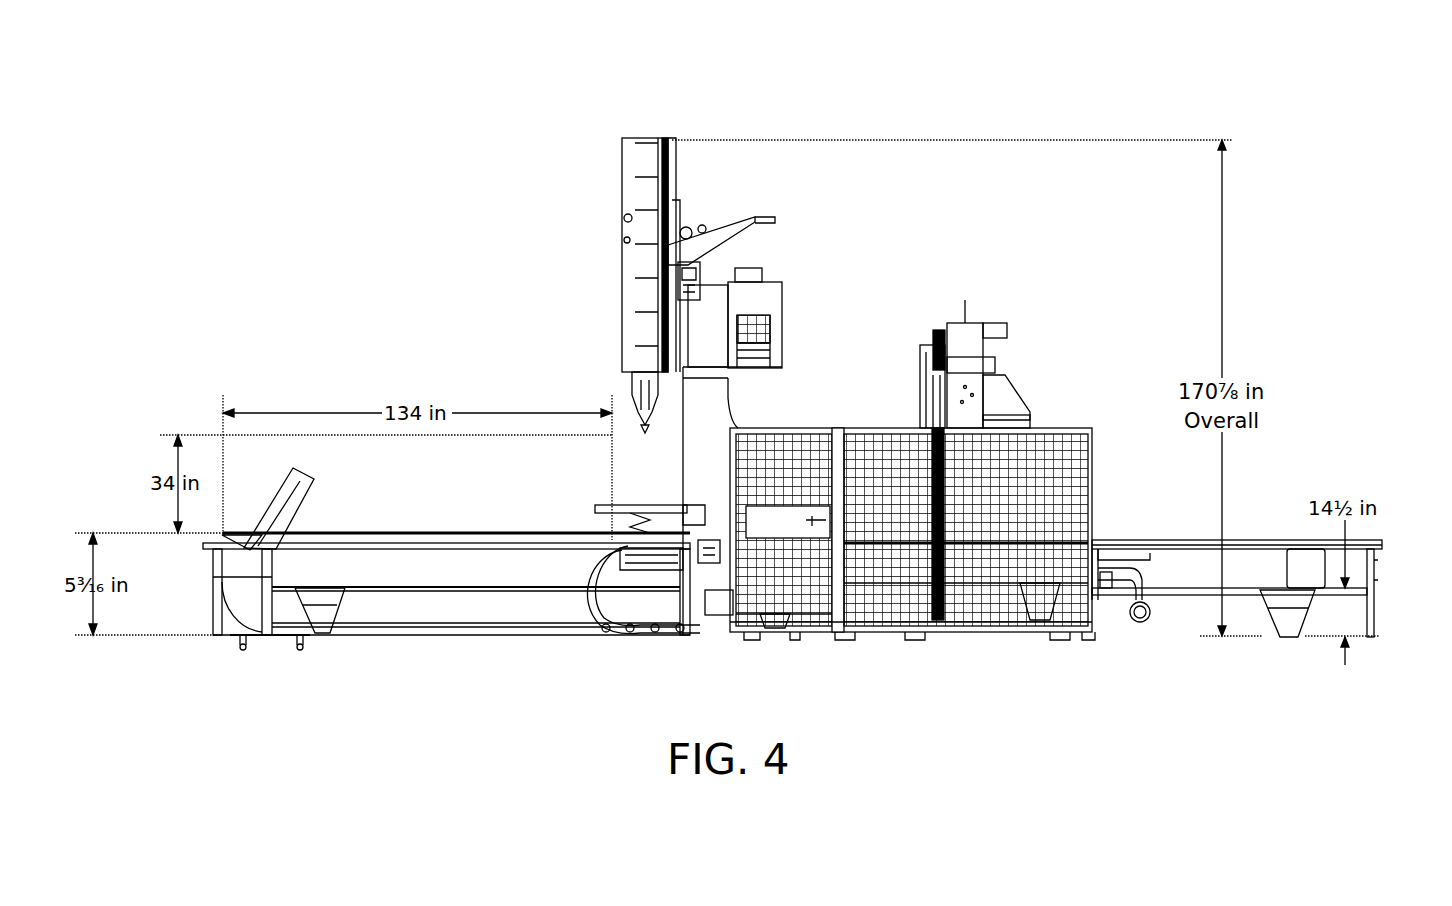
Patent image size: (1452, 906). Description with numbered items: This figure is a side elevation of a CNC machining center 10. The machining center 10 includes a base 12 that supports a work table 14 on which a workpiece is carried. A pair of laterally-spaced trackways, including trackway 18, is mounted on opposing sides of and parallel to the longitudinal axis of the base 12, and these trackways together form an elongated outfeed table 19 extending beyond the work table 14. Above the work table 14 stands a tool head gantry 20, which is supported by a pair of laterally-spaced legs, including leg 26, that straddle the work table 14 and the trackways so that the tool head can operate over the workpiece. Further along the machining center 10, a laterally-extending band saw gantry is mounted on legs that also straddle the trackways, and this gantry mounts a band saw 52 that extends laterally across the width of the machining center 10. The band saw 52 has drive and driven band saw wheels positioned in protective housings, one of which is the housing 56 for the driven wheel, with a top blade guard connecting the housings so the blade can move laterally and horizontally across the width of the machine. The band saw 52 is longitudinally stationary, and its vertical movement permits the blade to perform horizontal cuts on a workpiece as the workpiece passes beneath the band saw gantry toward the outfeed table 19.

The CNC machining center 10 is at (466, 136).
The base 12 is at (525, 636).
The work table 14 is at (398, 531).
The trackway 18 is at (1333, 540).
The outfeed table 19 is at (1377, 572).
The tool head gantry 20 is at (637, 160).
The leg 26 is at (690, 630).
The band saw 52 is at (1025, 254).
The protective housing 56 is at (936, 468).